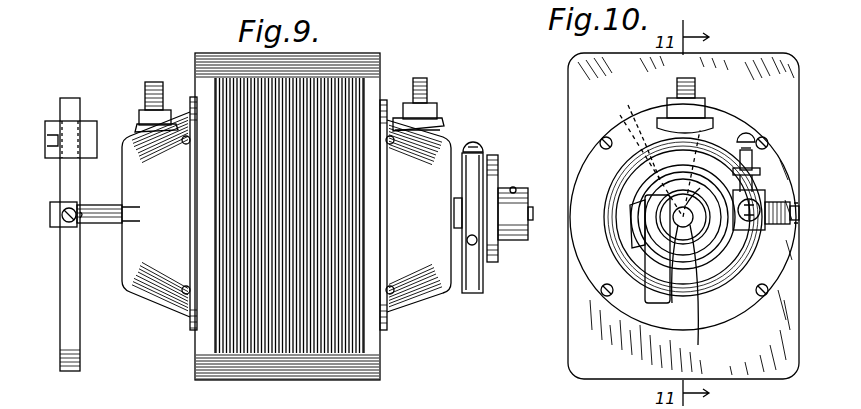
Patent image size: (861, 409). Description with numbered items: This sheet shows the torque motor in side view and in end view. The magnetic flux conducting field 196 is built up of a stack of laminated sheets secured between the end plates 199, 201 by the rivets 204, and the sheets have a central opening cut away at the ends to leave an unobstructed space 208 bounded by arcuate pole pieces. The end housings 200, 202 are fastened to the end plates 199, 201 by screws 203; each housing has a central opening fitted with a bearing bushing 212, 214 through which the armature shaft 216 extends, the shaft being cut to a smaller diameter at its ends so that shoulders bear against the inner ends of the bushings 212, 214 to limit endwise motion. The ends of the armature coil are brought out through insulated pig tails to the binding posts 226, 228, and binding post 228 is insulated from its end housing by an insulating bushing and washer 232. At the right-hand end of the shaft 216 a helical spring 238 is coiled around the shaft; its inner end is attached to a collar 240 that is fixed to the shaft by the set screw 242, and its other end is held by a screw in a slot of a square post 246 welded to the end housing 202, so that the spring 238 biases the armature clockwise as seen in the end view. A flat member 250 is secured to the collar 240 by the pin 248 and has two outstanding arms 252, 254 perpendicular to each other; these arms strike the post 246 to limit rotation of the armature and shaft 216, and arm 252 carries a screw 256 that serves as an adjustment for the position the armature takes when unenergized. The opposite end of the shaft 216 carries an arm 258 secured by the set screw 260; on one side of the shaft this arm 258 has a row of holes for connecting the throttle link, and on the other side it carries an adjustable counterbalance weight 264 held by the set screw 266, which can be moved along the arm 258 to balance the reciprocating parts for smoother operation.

In FIG. 9, the magnetic flux conducting field 196 is at (272, 381).
In FIG. 9, the end plate 199 is at (196, 360).
In FIG. 9, the end housing 200 is at (172, 308).
In FIG. 9, the end plate 201 is at (380, 372).
In FIG. 10, the end plate 201 is at (583, 362).
In FIG. 9, the end housing 202 is at (437, 300).
In FIG. 10, the end housing 202 is at (608, 252).
In FIG. 9, the screw 203 is at (187, 305).
In FIG. 10, the screw 203 is at (620, 275).
In FIG. 10, the rivet 204 is at (590, 407).
In FIG. 10, the unobstructed space 208 is at (768, 397).
In FIG. 9, the bearing bushing 212 is at (122, 208).
In FIG. 9, the bearing bushing 214 is at (474, 153).
In FIG. 9, the armature shaft 216 is at (102, 204).
In FIG. 10, the armature shaft 216 is at (698, 345).
In FIG. 9, the binding post 226 is at (156, 82).
In FIG. 9, the binding post 228 is at (421, 78).
In FIG. 10, the binding post 228 is at (696, 82).
In FIG. 9, the washer 232 is at (420, 130).
In FIG. 9, the helical spring 238 is at (498, 250).
In FIG. 10, the helical spring 238 is at (665, 228).
In FIG. 9, the collar 240 is at (528, 196).
In FIG. 10, the collar 240 is at (660, 303).
In FIG. 10, the set screw 242 is at (632, 120).
In FIG. 10, the square post 246 is at (782, 200).
In FIG. 9, the pin 248 is at (473, 246).
In FIG. 9, the flat member 250 is at (470, 190).
In FIG. 10, the flat member 250 is at (660, 200).
In FIG. 10, the arm 252 is at (765, 195).
In FIG. 10, the arm 254 is at (655, 290).
In FIG. 9, the screw 256 is at (482, 142).
In FIG. 10, the screw 256 is at (748, 138).
In FIG. 9, the arm 258 is at (72, 294).
In FIG. 9, the set screw 260 is at (70, 222).
In FIG. 9, the counterbalance weight 264 is at (97, 122).
In FIG. 9, the set screw 266 is at (47, 140).